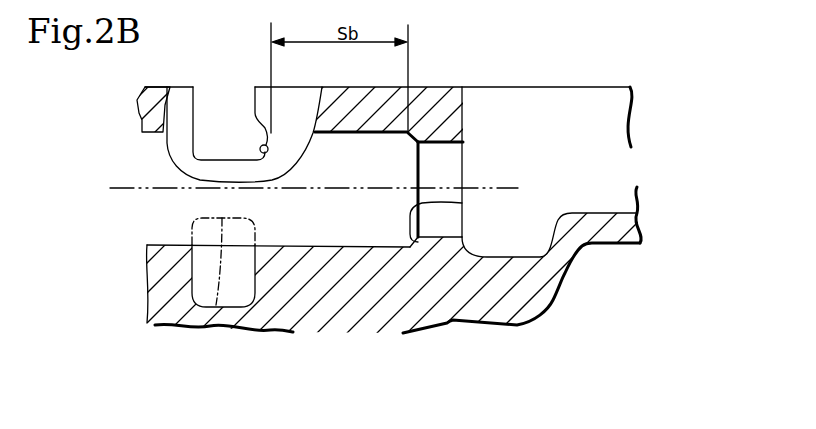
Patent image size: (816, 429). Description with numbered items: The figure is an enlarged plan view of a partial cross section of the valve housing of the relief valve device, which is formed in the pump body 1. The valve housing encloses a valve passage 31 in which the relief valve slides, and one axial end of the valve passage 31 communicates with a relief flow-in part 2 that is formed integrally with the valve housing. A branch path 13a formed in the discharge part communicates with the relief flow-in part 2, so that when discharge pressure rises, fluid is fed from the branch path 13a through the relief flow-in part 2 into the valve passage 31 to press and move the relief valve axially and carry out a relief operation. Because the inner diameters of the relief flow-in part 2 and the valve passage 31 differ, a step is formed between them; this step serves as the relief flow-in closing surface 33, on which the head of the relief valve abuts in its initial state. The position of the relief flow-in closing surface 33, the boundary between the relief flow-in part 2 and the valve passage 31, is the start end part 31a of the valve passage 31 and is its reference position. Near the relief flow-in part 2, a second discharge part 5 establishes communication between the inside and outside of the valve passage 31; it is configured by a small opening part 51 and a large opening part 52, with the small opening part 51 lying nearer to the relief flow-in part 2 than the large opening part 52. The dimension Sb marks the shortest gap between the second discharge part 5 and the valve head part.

The pump body 1 is at (560, 302).
The relief flow-in part 2 is at (446, 155).
The second discharge part 5 is at (229, 106).
The branch path 13a is at (556, 111).
The valve passage 31 is at (369, 232).
The start end part of the valve passage 31a is at (420, 240).
The relief flow-in closing surface 33 is at (463, 205).
The small opening part 51 is at (268, 153).
The large opening part 52 is at (215, 139).